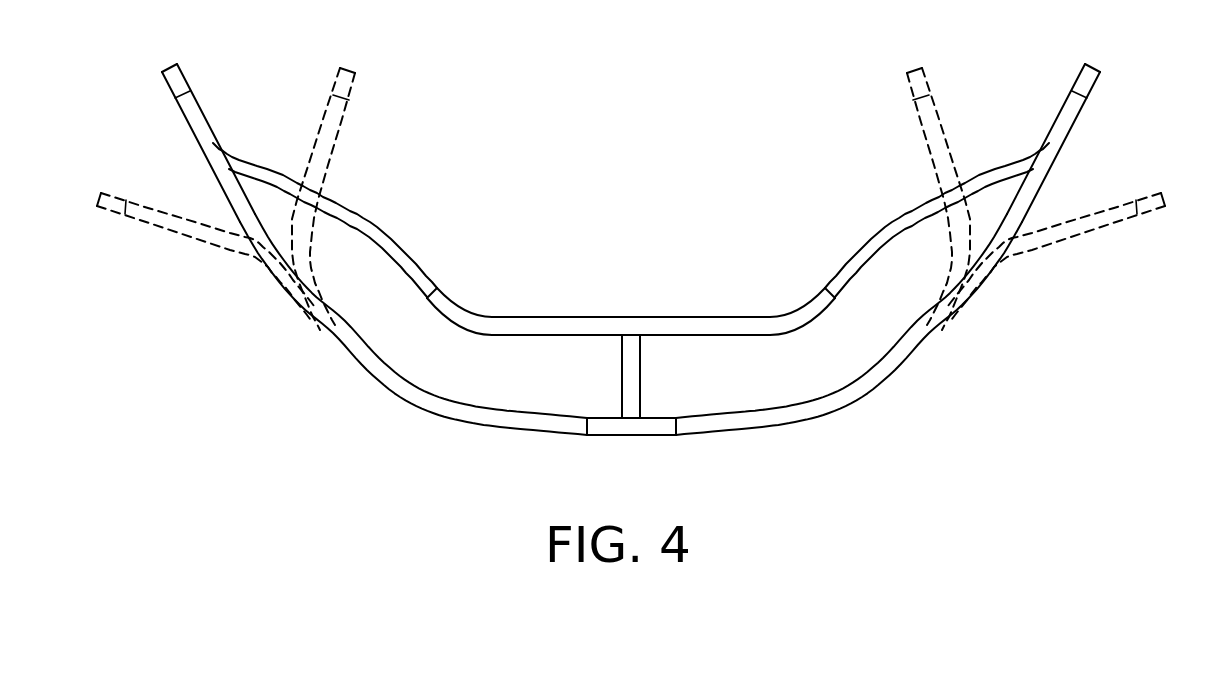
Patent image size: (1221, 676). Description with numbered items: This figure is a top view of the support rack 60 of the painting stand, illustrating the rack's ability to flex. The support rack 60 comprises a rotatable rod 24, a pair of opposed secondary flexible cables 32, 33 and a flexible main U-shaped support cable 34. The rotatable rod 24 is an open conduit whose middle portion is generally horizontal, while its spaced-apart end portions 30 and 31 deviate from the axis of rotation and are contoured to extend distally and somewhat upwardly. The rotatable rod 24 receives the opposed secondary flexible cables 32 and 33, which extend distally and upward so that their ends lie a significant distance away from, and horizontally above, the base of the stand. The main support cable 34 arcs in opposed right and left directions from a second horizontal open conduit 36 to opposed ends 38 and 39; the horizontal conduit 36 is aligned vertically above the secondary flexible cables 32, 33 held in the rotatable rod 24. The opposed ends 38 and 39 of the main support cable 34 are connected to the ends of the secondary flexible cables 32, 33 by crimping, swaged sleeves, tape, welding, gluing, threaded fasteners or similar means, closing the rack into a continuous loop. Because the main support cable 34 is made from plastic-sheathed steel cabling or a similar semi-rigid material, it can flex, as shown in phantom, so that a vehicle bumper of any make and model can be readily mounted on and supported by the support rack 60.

The rotatable rod 24 is at (697, 327).
The end portion of the rotatable rod 30 is at (829, 292).
The end portion of the rotatable rod 31 is at (440, 288).
The secondary flexible cable 32 is at (900, 223).
The secondary flexible cable 33 is at (377, 228).
The flexible main U-shaped support cable 34 is at (463, 413).
The horizontal open conduit 36 is at (653, 434).
The end of the main support cable 38 is at (1100, 84).
The end of the main support cable 39 is at (172, 88).
The support rack 60 is at (640, 287).